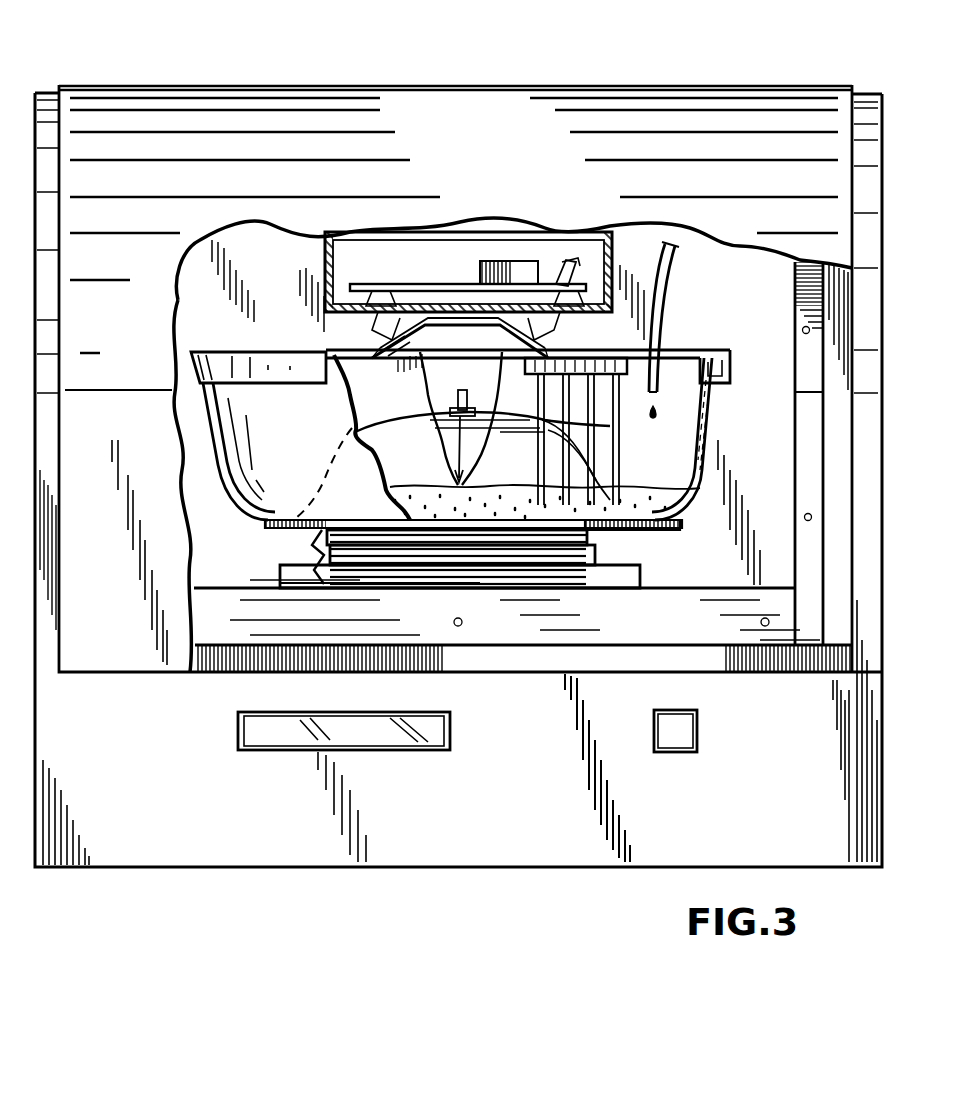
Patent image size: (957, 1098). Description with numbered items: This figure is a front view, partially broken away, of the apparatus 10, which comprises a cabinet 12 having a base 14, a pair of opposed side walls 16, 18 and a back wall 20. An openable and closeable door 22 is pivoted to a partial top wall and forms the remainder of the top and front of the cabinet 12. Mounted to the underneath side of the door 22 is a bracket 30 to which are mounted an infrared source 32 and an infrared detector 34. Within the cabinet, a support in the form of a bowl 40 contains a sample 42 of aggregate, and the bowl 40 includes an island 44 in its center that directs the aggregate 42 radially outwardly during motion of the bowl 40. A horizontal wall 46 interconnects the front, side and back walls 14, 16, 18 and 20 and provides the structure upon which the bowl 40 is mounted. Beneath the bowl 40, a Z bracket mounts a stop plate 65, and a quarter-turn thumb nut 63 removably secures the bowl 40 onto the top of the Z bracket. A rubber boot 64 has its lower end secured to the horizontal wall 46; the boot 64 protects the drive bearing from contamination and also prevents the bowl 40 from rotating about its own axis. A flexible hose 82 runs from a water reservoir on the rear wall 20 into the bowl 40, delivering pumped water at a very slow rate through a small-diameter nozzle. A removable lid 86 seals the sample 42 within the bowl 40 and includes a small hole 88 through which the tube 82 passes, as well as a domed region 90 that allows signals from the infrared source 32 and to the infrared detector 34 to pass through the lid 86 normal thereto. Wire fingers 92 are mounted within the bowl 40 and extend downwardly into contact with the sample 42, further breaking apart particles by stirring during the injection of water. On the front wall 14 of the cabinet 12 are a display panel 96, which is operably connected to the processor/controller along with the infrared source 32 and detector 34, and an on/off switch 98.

The apparatus 10 is at (654, 44).
The cabinet 12 is at (255, 866).
The base 14 is at (508, 868).
The side wall 16 is at (35, 452).
The side wall 18 is at (890, 702).
The back wall 20 is at (215, 304).
The door 22 is at (448, 160).
The bracket 30 is at (325, 278).
The infrared source 32 is at (398, 290).
The infrared detector 34 is at (530, 284).
The bowl 40 is at (222, 448).
The sample 42 is at (342, 486).
The island 44 is at (392, 437).
The horizontal wall 46 is at (664, 592).
The thumb nut 63 is at (492, 352).
The rubber boot 64 is at (318, 568).
The plate 65 is at (612, 532).
The hose 82 is at (668, 290).
The lid 86 is at (727, 360).
The hole 88 is at (656, 354).
The domed region 90 is at (420, 365).
The wire fingers 92 is at (600, 446).
The display panel 96 is at (300, 750).
The on/off switch 98 is at (680, 742).